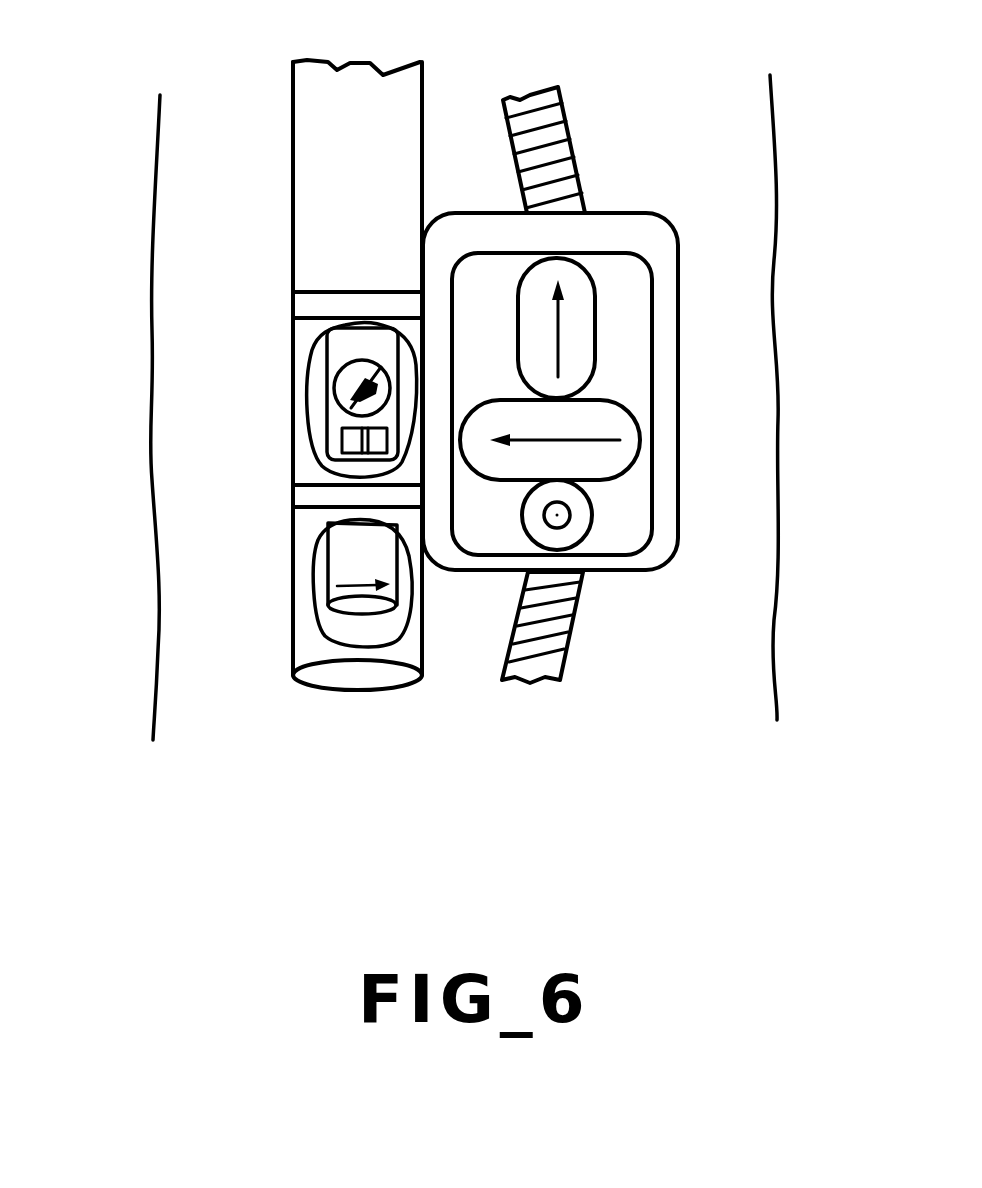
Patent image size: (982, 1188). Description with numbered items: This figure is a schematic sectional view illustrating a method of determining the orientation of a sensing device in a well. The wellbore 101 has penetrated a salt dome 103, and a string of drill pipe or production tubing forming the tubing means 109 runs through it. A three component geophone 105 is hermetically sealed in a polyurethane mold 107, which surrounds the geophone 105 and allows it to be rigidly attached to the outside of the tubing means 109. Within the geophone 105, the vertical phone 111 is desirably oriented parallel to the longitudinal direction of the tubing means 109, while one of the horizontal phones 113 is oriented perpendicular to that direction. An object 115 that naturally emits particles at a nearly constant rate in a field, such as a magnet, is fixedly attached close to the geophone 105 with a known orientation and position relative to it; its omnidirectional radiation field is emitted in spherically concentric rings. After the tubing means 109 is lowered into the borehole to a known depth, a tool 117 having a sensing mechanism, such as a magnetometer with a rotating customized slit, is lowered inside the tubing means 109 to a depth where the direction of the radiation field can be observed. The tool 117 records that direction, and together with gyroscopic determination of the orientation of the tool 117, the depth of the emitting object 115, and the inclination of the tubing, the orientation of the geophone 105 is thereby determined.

The wellbore 101 is at (212, 250).
The salt dome 103 is at (110, 525).
The three component geophone 105 is at (628, 573).
The mold 107 is at (678, 282).
The tubing means 109 is at (293, 122).
The vertical phone 111 is at (590, 292).
The horizontal phones 113 is at (630, 468).
The object 115 is at (676, 428).
The tool 117 is at (327, 423).